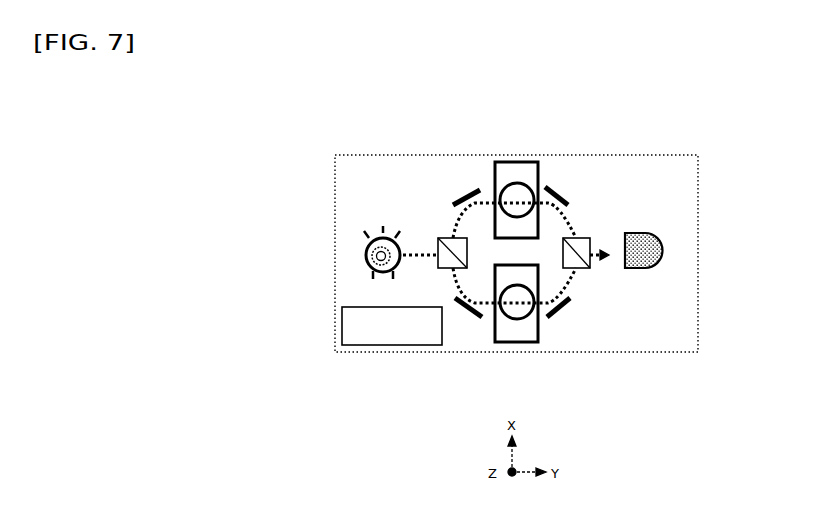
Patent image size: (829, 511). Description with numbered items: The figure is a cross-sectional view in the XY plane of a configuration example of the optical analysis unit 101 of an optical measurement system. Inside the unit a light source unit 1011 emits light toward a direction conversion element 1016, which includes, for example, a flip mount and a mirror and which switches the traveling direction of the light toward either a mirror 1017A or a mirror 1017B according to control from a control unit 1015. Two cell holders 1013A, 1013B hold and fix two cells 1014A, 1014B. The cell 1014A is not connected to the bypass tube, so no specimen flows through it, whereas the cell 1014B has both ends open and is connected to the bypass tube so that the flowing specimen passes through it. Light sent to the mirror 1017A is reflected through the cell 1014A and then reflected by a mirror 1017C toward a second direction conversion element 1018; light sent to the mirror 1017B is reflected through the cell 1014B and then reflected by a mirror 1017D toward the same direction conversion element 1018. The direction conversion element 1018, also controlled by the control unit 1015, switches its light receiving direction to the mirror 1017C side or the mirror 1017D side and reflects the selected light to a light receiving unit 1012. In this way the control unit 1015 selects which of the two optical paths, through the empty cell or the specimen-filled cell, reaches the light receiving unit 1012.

The optical analysis unit 101 is at (335, 331).
The light source unit 1011 is at (366, 258).
The light receiving unit 1012 is at (660, 262).
The cell holder 1013A is at (495, 184).
The cell holder 1013B is at (495, 323).
The cell 1014A is at (528, 182).
The cell 1014B is at (538, 330).
The control unit 1015 is at (348, 342).
The direction conversion element 1016 is at (447, 238).
The mirror 1017A is at (477, 190).
The mirror 1017B is at (458, 307).
The mirror 1017C is at (569, 196).
The mirror 1017D is at (548, 318).
The direction conversion element 1018 is at (583, 268).